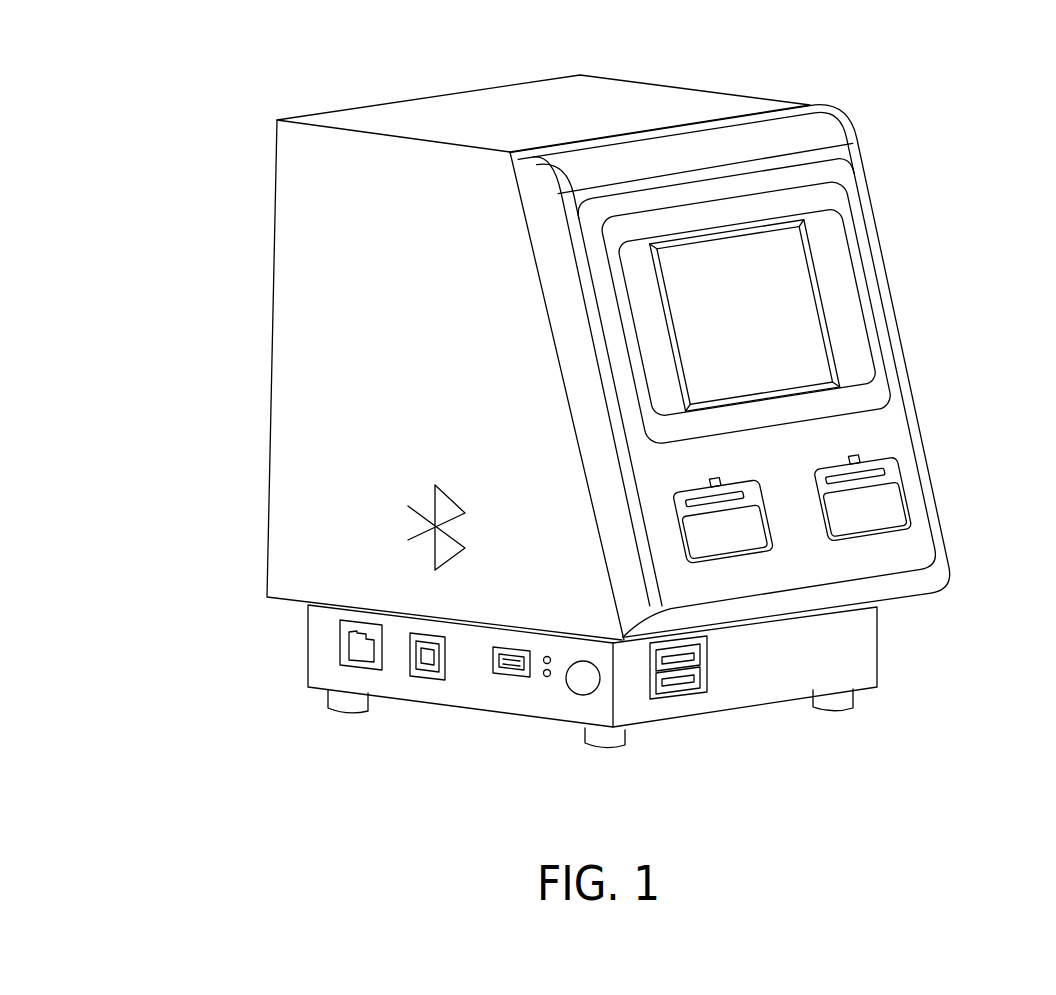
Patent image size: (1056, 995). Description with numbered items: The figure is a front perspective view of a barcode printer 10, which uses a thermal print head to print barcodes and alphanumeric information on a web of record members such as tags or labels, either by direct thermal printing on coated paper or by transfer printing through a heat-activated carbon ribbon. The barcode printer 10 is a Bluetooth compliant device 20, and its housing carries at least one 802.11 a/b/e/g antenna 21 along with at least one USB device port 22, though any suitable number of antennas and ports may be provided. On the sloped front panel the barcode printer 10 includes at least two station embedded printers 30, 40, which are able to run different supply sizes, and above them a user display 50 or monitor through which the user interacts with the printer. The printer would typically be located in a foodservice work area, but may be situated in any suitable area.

The barcode printer 10 is at (588, 423).
The Bluetooth compliant device 20 is at (428, 568).
The 802.11 a/b/e/g antenna 21 is at (575, 690).
The USB device port 22 is at (418, 673).
The station embedded printer 30 is at (733, 567).
The station embedded printer 40 is at (880, 540).
The user display 50 is at (738, 257).